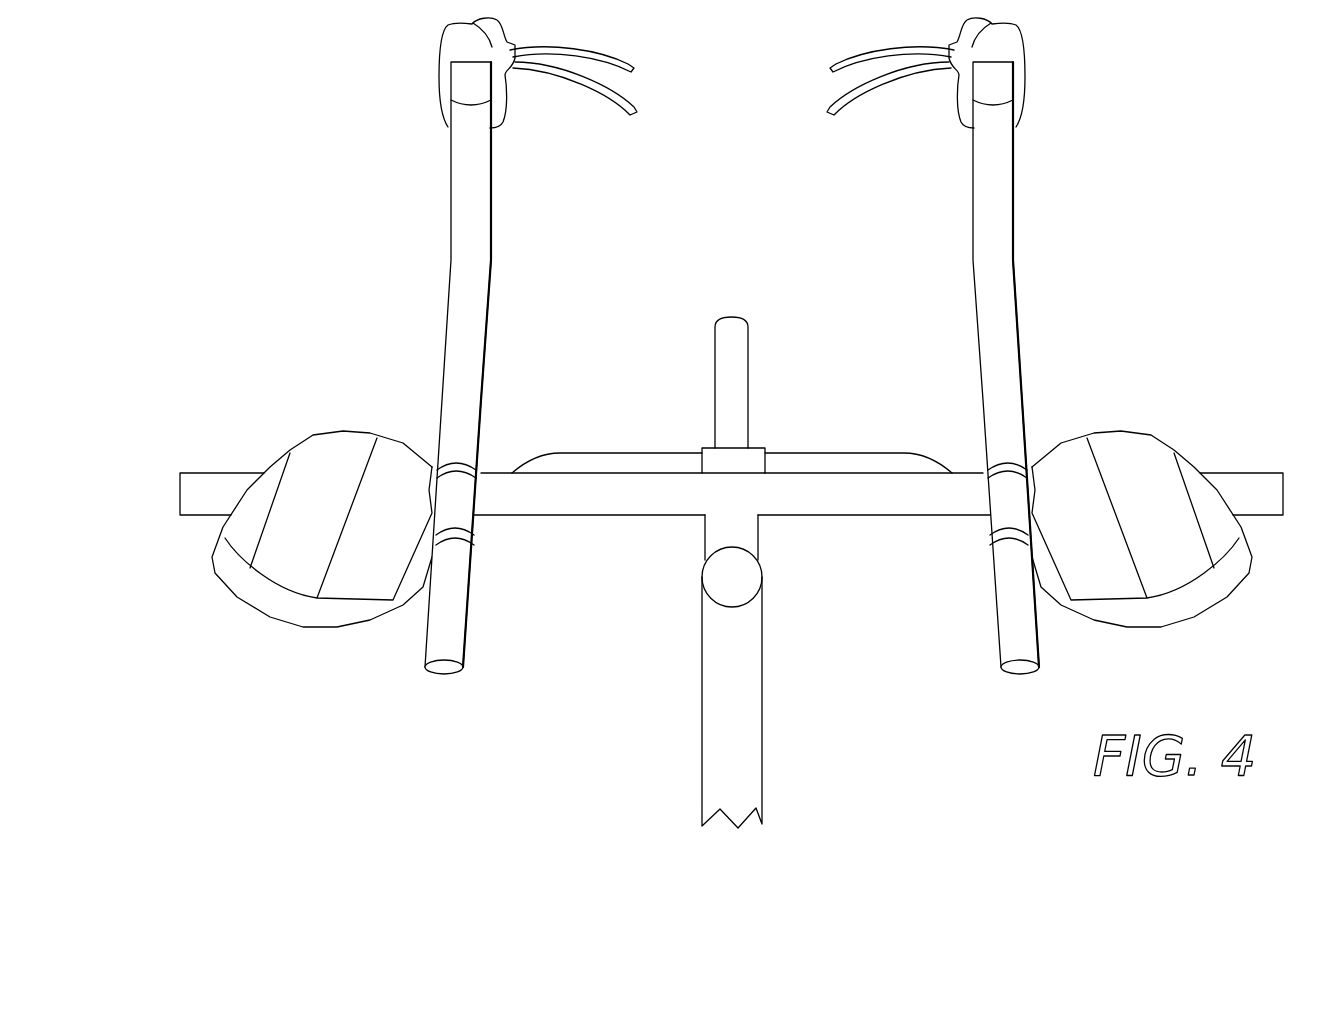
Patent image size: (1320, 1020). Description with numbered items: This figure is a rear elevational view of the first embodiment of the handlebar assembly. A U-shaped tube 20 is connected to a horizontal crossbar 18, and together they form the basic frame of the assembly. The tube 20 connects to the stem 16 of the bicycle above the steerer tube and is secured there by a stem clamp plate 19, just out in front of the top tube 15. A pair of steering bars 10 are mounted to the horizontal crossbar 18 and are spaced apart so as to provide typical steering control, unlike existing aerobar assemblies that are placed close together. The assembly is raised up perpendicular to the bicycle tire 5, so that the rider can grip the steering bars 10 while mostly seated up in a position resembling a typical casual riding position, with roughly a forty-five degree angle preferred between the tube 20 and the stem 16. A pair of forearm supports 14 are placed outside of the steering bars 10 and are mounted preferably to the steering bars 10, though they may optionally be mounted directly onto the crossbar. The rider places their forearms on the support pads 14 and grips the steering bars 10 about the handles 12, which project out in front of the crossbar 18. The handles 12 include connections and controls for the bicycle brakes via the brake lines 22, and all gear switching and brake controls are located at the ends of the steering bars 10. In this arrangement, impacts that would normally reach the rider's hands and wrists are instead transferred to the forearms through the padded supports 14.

The bicycle tire 5 is at (748, 366).
The steering bars 10 is at (453, 247).
The handles 12 is at (438, 76).
The forearm supports 14 is at (358, 430).
The top tube 15 is at (762, 672).
The stem 16 is at (758, 539).
The horizontal crossbar 18 is at (661, 516).
The stem clamp plate 19 is at (713, 448).
The U-shaped tube 20 is at (630, 453).
The brake lines 22 is at (842, 101).